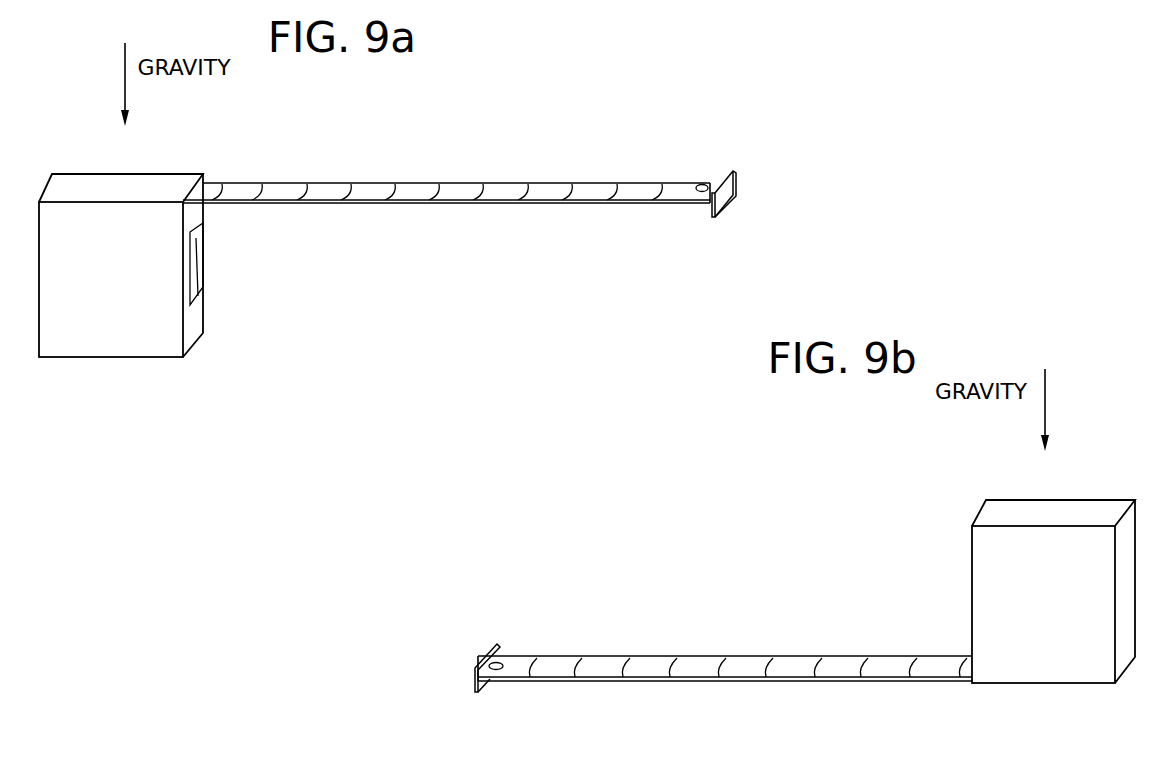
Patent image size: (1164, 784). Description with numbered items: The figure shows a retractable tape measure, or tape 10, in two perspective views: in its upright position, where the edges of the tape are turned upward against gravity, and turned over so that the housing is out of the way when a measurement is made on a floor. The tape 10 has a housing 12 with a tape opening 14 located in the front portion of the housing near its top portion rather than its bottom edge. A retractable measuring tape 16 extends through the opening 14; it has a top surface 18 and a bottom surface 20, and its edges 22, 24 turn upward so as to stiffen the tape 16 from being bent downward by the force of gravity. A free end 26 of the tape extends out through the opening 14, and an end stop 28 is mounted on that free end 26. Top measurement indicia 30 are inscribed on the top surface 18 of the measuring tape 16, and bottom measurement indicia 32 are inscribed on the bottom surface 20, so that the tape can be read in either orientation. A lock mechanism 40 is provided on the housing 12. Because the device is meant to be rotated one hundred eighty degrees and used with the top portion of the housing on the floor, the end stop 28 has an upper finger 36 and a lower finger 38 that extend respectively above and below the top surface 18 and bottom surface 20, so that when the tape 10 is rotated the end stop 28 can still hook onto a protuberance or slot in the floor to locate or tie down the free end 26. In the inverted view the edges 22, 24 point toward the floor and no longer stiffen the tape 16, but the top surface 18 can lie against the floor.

In FIG. 9A, the tape 10 is at (402, 258).
In FIG. 9B, the tape 10 is at (804, 608).
In FIG. 9A, the housing 12 is at (163, 333).
In FIG. 9B, the housing 12 is at (1073, 543).
In FIG. 9A, the tape opening 14 is at (220, 187).
In FIG. 9B, the tape opening 14 is at (725, 668).
In FIG. 9A, the retractable measuring tape 16 is at (633, 188).
In FIG. 9B, the retractable measuring tape 16 is at (690, 657).
In FIG. 9A, the top surface 18 is at (452, 188).
In FIG. 9B, the bottom surface 20 is at (620, 658).
In FIG. 9A, the edge 22 is at (620, 205).
In FIG. 9B, the edge 22 is at (845, 683).
In FIG. 9A, the edge 24 is at (702, 180).
In FIG. 9B, the edge 24 is at (857, 656).
In FIG. 9A, the free end 26 is at (712, 213).
In FIG. 9B, the free end 26 is at (542, 683).
In FIG. 9A, the end stop 28 is at (735, 182).
In FIG. 9B, the end stop 28 is at (473, 668).
In FIG. 9A, the top measurement indicia 30 is at (522, 183).
In FIG. 9B, the bottom measurement indicia 32 is at (650, 683).
In FIG. 9A, the upper finger 36 is at (732, 177).
In FIG. 9B, the upper finger 36 is at (475, 693).
In FIG. 9A, the lower finger 38 is at (725, 207).
In FIG. 9B, the lower finger 38 is at (497, 647).
In FIG. 9A, the lock mechanism 40 is at (203, 237).